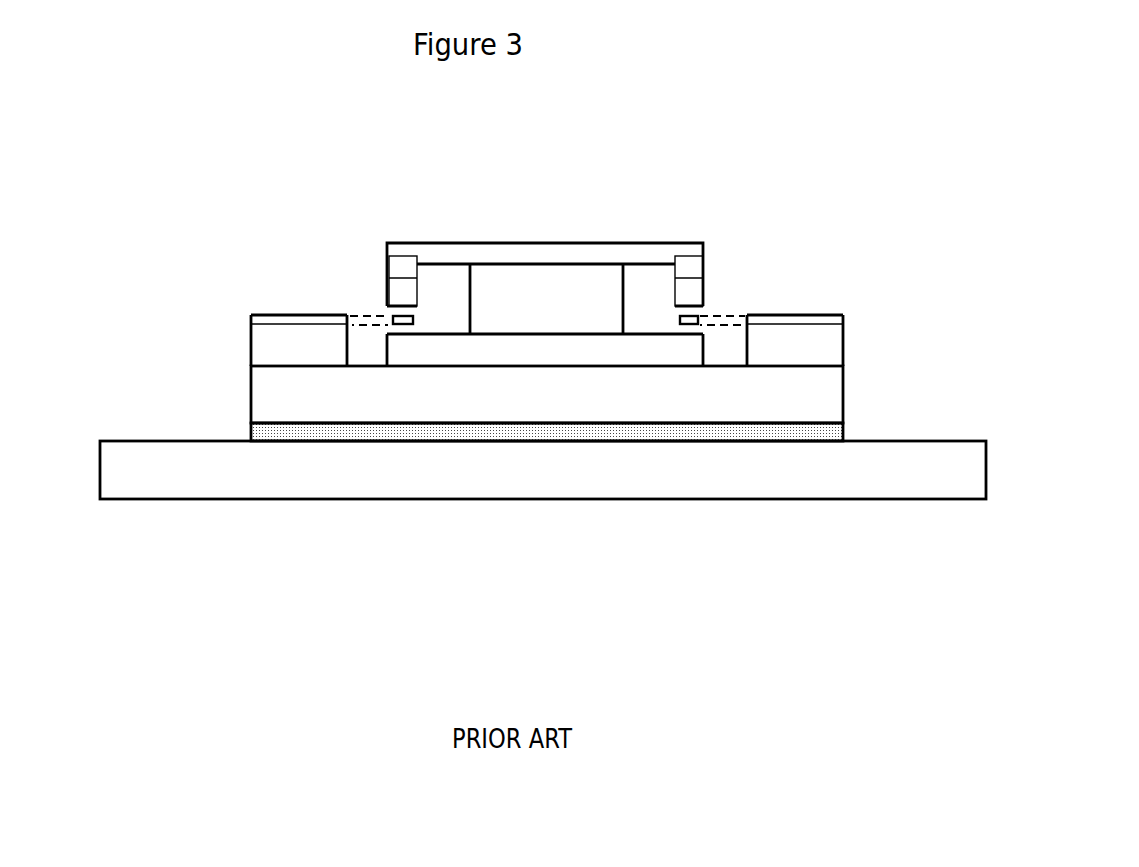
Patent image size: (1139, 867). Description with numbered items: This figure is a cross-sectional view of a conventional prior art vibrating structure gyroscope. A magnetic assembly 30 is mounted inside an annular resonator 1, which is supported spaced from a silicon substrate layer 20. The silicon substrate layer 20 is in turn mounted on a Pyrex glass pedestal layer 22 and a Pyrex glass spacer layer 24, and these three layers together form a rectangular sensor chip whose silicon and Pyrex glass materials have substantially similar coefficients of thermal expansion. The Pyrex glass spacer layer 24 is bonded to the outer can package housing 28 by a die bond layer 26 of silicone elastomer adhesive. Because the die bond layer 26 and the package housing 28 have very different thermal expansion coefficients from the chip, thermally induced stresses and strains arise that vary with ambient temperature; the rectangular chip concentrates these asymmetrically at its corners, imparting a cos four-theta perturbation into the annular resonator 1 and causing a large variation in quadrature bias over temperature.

The magnetic assembly 30 is at (665, 223).
The annular resonator 1 is at (687, 315).
The silicon substrate layer 20 is at (860, 318).
The Pyrex glass pedestal layer 22 is at (860, 348).
The Pyrex glass spacer layer 24 is at (860, 397).
The die bond layer 26 is at (860, 436).
The package housing 28 is at (1003, 476).